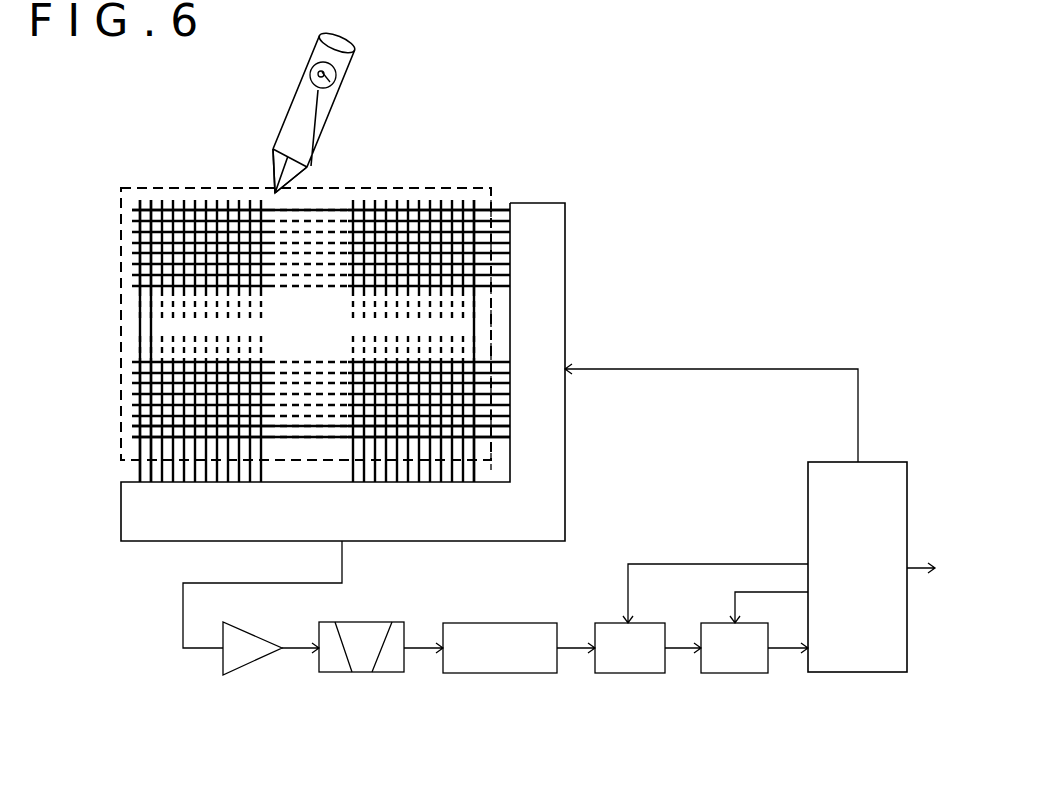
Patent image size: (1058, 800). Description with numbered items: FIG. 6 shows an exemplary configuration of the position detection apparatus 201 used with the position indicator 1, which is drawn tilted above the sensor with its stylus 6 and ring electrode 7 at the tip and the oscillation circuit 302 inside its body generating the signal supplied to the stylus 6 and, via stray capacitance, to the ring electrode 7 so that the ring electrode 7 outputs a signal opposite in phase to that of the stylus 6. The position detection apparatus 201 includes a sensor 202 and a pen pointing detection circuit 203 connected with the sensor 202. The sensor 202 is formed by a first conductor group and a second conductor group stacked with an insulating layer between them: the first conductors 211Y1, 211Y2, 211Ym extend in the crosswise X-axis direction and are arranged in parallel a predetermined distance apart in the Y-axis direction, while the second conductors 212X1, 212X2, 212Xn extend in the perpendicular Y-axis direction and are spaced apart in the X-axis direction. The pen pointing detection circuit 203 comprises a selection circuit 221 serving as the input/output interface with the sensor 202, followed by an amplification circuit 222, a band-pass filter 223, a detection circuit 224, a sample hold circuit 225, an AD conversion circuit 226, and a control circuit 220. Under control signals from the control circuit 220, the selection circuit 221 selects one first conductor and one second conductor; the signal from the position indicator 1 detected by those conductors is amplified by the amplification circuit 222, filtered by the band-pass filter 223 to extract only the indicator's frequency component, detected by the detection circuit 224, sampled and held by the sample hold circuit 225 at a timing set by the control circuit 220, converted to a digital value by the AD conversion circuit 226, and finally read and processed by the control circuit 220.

The position indicator 1 is at (298, 98).
The stylus 6 is at (272, 152).
The ring electrode 7 is at (300, 169).
The oscillation circuit 302 is at (336, 72).
The position detection apparatus 201 is at (663, 247).
The sensor 202 is at (367, 188).
The pen pointing detection circuit 203 is at (643, 421).
The first conductor 211Y1 is at (137, 446).
The first conductor 211Y2 is at (135, 427).
The first conductor 211Ym is at (134, 209).
The second conductor 212X1 is at (140, 208).
The second conductor 212X2 is at (151, 206).
The second conductor 212Xn is at (475, 208).
The control circuit 220 is at (846, 675).
The selection circuit 221 is at (536, 203).
The amplification circuit 222 is at (250, 667).
The band-pass filter 223 is at (346, 675).
The detection circuit 224 is at (487, 675).
The sample hold circuit 225 is at (621, 675).
The AD conversion circuit 226 is at (721, 675).